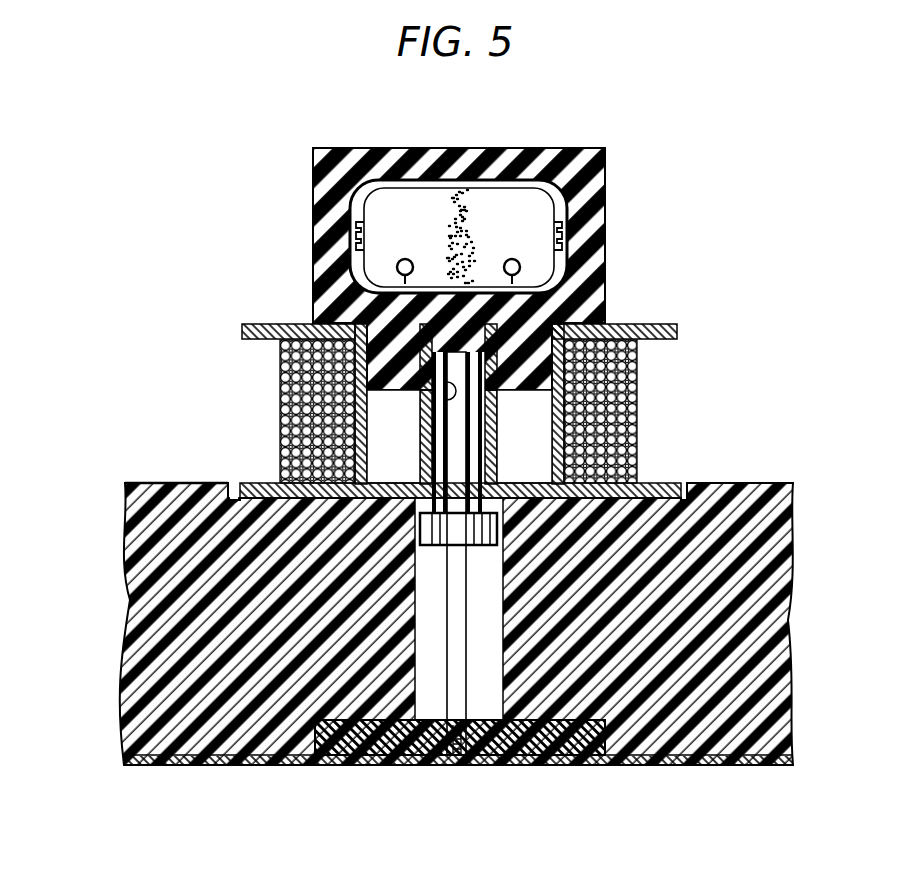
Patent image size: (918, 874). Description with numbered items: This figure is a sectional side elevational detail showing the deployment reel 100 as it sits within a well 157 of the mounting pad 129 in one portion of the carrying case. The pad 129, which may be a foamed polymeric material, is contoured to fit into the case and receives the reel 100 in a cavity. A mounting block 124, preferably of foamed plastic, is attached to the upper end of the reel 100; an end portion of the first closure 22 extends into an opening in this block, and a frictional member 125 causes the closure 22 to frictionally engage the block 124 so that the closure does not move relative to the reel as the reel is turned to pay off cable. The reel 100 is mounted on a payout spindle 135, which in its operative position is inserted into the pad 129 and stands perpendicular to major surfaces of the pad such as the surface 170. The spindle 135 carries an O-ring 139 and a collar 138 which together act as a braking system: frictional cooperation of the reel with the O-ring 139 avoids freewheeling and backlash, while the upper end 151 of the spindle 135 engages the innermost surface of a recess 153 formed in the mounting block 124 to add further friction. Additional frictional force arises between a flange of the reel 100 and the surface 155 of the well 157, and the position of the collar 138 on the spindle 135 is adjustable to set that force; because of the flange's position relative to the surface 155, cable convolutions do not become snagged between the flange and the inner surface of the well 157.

The first closure 22 is at (458, 192).
The deployment reel 100 is at (248, 323).
The mounting block 124 is at (363, 149).
The frictional member 125 is at (500, 187).
The mounting pad 129 is at (128, 612).
The payout spindle 135 is at (457, 694).
The collar 138 is at (412, 488).
The O-ring 139 is at (510, 488).
The upper end of the spindle 151 is at (476, 392).
The recess 153 is at (445, 393).
The surface of the well 155 is at (232, 488).
The well 157 is at (256, 487).
The surface of the pad 170 is at (160, 483).